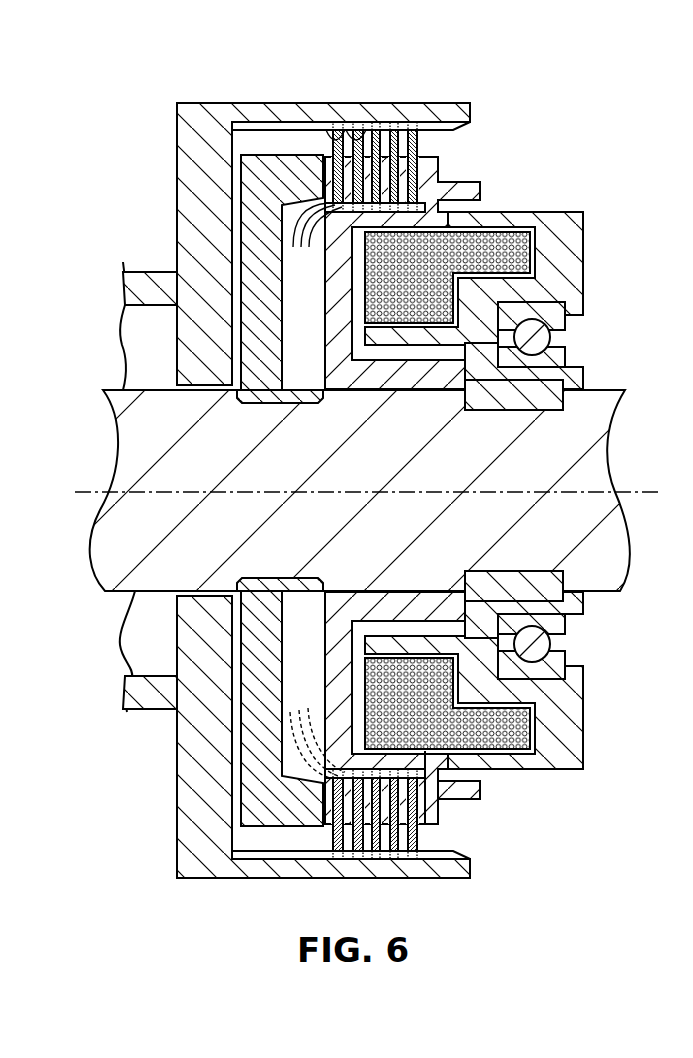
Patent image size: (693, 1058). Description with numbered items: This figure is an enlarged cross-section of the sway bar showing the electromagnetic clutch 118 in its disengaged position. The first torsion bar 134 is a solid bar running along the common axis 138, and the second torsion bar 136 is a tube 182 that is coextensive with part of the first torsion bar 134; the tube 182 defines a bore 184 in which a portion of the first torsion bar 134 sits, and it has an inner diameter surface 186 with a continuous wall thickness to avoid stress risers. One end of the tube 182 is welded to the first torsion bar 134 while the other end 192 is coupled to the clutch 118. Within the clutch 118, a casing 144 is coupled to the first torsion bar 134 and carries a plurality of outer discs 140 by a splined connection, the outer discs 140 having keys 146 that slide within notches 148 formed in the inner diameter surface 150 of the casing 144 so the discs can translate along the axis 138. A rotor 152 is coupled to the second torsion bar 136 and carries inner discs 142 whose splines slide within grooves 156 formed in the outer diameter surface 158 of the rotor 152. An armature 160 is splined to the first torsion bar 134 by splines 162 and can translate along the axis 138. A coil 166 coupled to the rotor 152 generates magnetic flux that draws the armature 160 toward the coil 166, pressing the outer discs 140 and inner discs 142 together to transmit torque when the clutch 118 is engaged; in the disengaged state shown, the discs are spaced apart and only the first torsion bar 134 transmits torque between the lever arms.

The clutch 118 is at (277, 460).
The first torsion bar 134 is at (603, 387).
The second torsion bar 136 is at (123, 271).
The common axis 138 is at (583, 486).
The outer discs 140 is at (368, 130).
The inner discs 142 is at (313, 241).
The casing 144 is at (177, 120).
The keys 146 is at (412, 122).
The notches 148 is at (440, 130).
The inner diameter surface 150 is at (432, 138).
The rotor 152 is at (483, 790).
The grooves 156 is at (412, 770).
The outer diameter surface 158 is at (347, 773).
The armature 160 is at (257, 155).
The splines 162 is at (316, 732).
The coil 166 is at (533, 732).
The tube 182 is at (160, 265).
The bore 184 is at (167, 359).
The inner diameter surface 186 is at (150, 308).
The end 192 is at (177, 265).